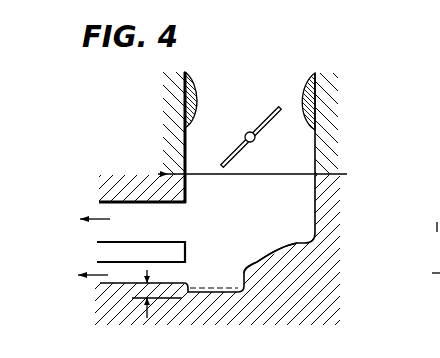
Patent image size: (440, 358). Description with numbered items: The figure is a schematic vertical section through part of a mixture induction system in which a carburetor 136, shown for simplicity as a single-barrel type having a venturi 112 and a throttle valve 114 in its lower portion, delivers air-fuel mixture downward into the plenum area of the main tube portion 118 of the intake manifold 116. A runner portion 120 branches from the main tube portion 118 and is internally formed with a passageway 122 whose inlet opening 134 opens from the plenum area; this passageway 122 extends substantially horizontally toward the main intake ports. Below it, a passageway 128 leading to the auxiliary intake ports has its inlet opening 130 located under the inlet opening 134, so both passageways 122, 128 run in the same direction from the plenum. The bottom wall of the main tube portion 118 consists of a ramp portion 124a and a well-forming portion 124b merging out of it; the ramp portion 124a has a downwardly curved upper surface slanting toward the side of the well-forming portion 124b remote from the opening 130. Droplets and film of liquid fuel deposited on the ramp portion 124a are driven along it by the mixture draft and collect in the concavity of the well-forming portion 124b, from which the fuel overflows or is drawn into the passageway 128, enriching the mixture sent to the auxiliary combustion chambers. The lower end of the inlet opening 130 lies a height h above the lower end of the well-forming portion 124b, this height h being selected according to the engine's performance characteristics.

The venturi 112 is at (195, 95).
The throttle valve 114 is at (245, 137).
The intake manifold 116 is at (145, 177).
The main tube portion 118 is at (327, 203).
The runner portion 120 is at (110, 183).
The passageway 122 is at (110, 241).
The ramp portion 124a is at (283, 251).
The well-forming portion 124b is at (245, 290).
The passageway 128 is at (110, 285).
The inlet opening 130 is at (182, 272).
The inlet opening 134 is at (177, 225).
The carburetor 136 is at (344, 94).
The height h is at (148, 290).